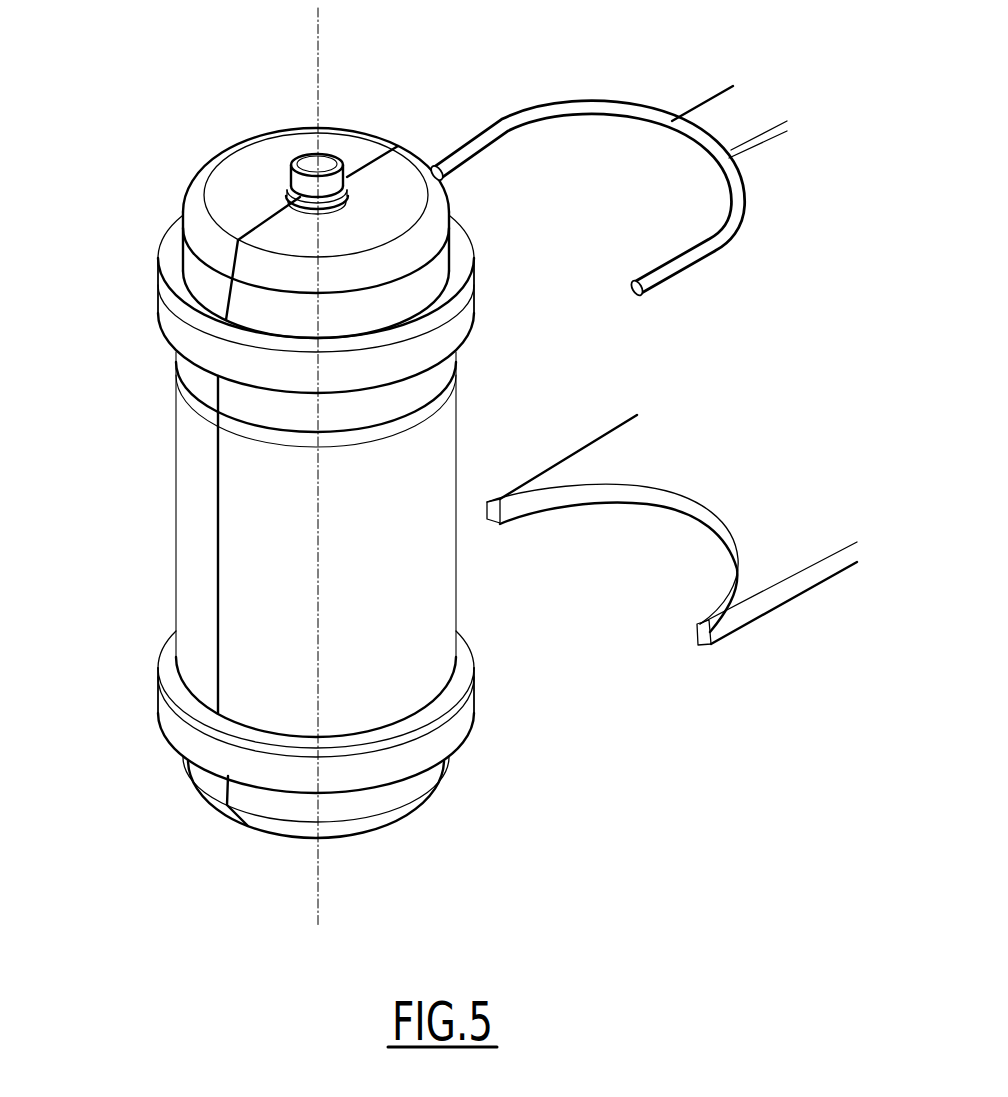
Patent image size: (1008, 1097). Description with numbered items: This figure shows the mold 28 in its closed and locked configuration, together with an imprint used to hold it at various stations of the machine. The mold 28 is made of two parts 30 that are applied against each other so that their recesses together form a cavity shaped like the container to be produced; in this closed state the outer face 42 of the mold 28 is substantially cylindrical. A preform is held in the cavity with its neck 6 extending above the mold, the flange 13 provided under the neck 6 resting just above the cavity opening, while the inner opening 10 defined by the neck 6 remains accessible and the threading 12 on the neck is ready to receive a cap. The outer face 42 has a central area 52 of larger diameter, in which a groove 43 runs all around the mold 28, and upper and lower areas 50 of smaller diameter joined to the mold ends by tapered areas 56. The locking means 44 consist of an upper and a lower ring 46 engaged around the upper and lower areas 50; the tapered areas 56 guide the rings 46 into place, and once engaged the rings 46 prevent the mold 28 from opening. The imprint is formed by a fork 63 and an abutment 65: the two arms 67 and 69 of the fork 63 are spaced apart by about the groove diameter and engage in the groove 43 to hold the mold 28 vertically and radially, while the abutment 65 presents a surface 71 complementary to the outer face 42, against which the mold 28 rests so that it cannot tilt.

The mold 28 is at (140, 548).
The parts 30 is at (189, 433).
The central area 52 is at (430, 587).
The outer face 42 is at (442, 389).
The groove 43 is at (186, 396).
The locking means 44 is at (458, 325).
The ring 46 is at (164, 302).
The upper and lower areas 50 is at (437, 268).
The tapered area 56 is at (437, 204).
The neck 6 is at (347, 167).
The flange 13 is at (356, 188).
The inner opening 10 is at (302, 157).
The threading 12 is at (284, 176).
The fork 63 is at (780, 203).
The arm 67 is at (478, 148).
The arm 69 is at (661, 274).
The surface 71 is at (667, 500).
The abutment 65 is at (780, 560).